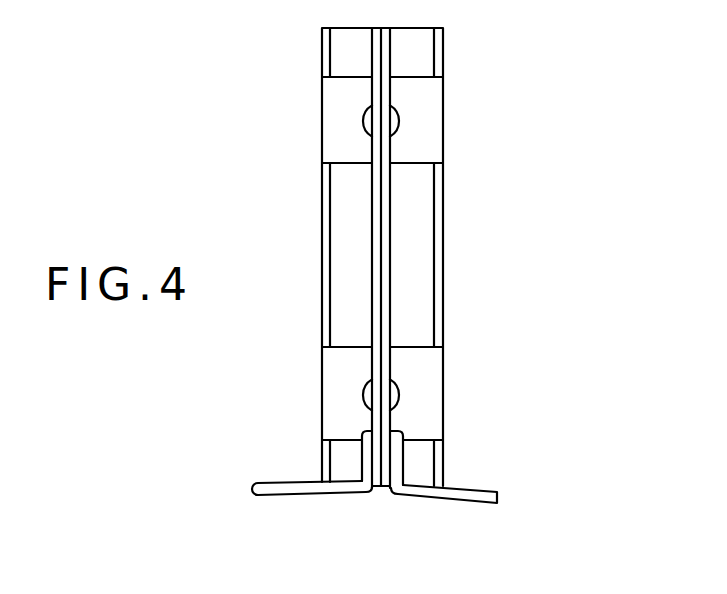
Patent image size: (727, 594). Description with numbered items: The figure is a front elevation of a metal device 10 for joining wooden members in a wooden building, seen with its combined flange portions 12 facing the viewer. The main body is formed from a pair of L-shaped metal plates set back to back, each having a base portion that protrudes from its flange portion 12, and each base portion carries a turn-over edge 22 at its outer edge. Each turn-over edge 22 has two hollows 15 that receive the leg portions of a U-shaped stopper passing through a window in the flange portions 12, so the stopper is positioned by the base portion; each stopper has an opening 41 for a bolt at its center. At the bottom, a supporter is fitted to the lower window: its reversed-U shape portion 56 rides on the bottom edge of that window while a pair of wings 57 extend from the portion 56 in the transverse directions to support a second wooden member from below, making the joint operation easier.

The connector assembly 10 is at (545, 255).
The flange portion 12 is at (390, 297).
The hollow 15 is at (323, 80).
The turn-over edge 22 is at (325, 50).
The opening for bolt 41 is at (400, 113).
The reversed-U shape portion 56 is at (358, 458).
The wing 57 is at (497, 490).